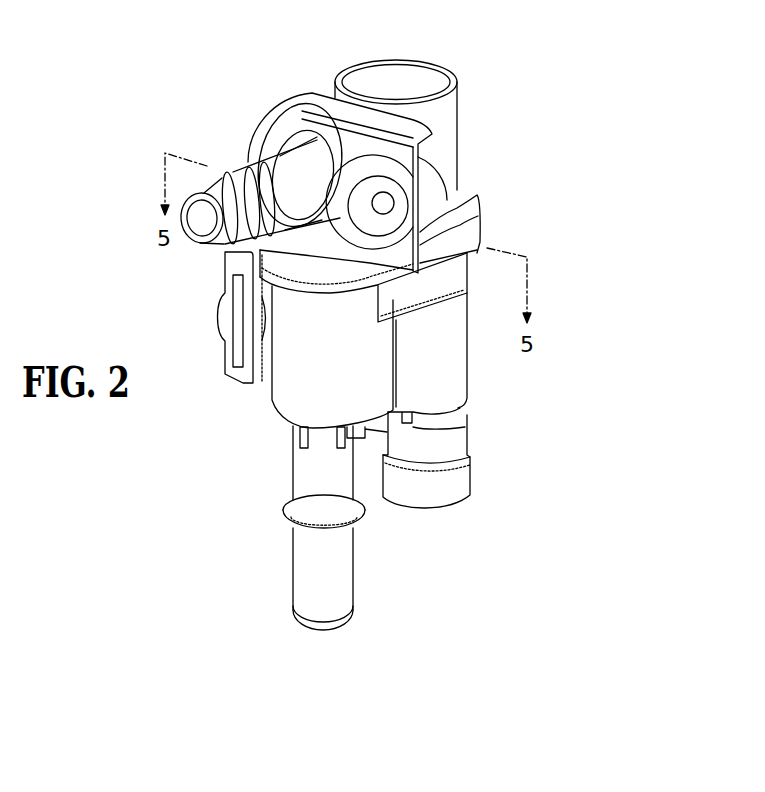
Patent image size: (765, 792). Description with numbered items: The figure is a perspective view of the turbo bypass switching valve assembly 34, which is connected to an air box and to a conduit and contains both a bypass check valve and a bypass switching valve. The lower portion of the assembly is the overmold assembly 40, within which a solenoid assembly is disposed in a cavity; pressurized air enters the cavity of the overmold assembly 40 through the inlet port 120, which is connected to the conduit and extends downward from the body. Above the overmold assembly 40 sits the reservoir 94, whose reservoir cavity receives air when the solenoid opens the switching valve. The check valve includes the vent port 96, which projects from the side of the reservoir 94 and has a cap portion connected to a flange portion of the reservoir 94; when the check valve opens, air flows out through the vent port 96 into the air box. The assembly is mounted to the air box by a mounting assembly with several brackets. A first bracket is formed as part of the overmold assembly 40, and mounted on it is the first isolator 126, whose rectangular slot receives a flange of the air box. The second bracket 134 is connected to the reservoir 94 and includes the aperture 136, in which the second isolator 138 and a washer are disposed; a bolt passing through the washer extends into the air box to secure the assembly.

The bypass switching valve assembly 34 is at (516, 118).
The overmold assembly 40 is at (298, 392).
The reservoir 94 is at (450, 145).
The vent port 96 is at (225, 203).
The inlet port 120 is at (340, 562).
The first isolator 126 is at (235, 374).
The second bracket 134 is at (330, 100).
The aperture 136 is at (386, 207).
The second isolator 138 is at (358, 172).